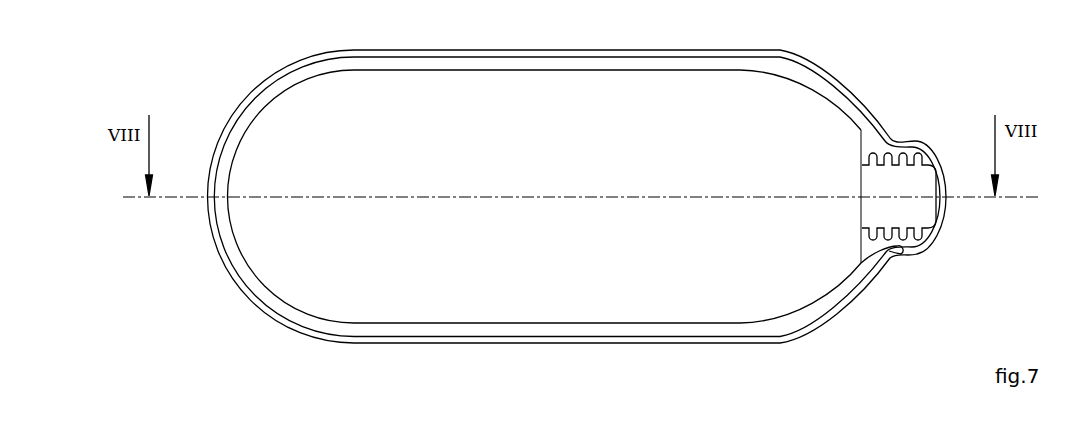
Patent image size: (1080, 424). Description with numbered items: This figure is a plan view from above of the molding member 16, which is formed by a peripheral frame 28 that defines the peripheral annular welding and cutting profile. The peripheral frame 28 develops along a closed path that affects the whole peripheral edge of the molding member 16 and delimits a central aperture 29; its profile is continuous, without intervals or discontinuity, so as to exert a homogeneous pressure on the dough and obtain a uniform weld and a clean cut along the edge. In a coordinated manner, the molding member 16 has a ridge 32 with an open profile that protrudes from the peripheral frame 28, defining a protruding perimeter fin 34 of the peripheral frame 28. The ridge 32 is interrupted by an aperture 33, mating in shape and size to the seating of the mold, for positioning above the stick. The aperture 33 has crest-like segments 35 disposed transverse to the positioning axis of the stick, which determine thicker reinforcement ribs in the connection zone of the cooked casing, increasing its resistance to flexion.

The molding member 16 is at (853, 62).
The peripheral frame 28 is at (527, 348).
The central aperture 29 is at (557, 74).
The ridge 32 is at (280, 307).
The aperture 33 is at (907, 142).
The protruding perimeter fin 34 is at (321, 340).
The segments 35 is at (915, 159).